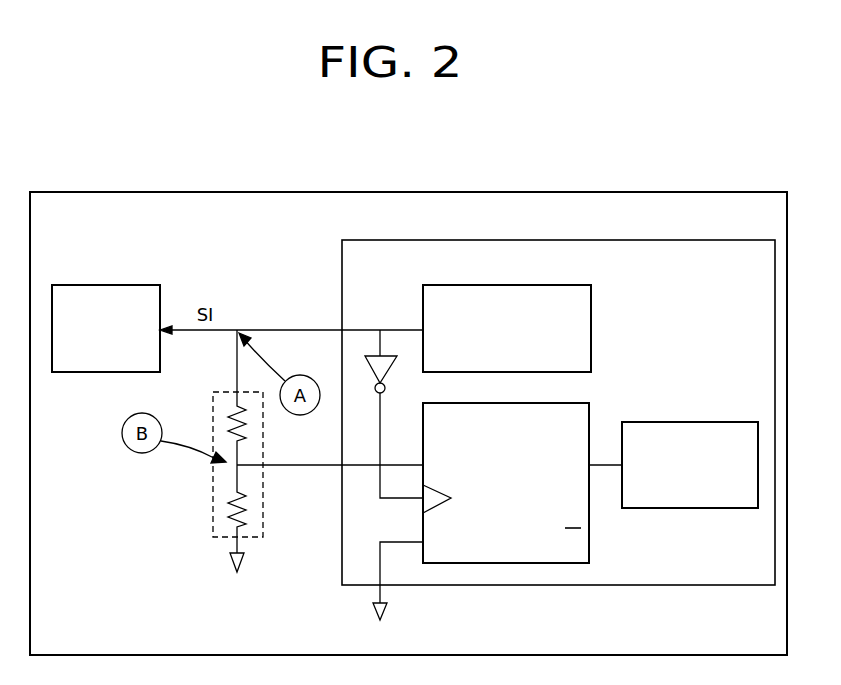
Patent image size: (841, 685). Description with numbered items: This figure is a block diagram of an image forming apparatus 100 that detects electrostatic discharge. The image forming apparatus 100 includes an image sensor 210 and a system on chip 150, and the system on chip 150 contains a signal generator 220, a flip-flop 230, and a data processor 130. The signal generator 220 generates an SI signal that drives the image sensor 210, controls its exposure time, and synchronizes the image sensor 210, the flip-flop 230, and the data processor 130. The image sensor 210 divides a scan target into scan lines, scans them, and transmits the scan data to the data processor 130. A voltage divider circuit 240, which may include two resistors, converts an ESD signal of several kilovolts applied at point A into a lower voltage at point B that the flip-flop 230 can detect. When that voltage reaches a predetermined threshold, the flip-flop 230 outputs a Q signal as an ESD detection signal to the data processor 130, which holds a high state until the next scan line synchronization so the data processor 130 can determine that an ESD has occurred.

The image forming apparatus 100 is at (408, 423).
The system on chip (SoC) 150 is at (558, 412).
The image sensor 210 is at (106, 328).
The signal generator 220 is at (507, 328).
The flip-flop 230 is at (506, 483).
The data processor 130 is at (690, 465).
The voltage divider circuit 240 is at (213, 517).